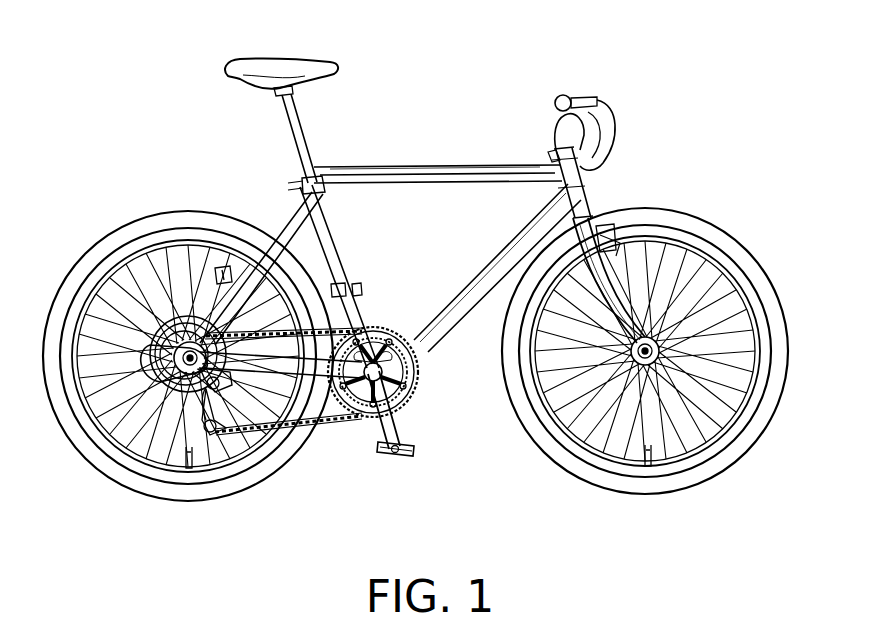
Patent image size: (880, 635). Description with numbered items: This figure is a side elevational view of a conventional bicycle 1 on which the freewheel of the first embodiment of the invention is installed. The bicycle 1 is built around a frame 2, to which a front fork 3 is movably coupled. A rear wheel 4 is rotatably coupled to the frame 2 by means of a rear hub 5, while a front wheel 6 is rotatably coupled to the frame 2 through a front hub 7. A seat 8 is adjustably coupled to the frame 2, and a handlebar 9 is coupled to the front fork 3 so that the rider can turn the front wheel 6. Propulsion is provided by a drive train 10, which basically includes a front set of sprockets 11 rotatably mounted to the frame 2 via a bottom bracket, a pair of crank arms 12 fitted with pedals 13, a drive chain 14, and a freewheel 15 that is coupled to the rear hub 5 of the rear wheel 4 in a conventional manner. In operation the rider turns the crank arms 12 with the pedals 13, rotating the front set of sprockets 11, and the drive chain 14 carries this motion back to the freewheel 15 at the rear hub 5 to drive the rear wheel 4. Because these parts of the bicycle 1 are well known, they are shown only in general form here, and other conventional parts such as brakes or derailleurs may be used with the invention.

The bicycle 1 is at (700, 103).
The frame 2 is at (457, 183).
The front fork 3 is at (618, 222).
The rear wheel 4 is at (192, 210).
The rear hub 5 is at (128, 340).
The front wheel 6 is at (678, 208).
The front hub 7 is at (683, 292).
The seat 8 is at (240, 63).
The handlebar 9 is at (572, 98).
The drive train 10 is at (328, 443).
The front set of sprockets 11 is at (430, 376).
The crank arms 12 is at (396, 426).
The pedals 13 is at (413, 460).
The drive chain 14 is at (293, 447).
The freewheel 15 is at (130, 355).